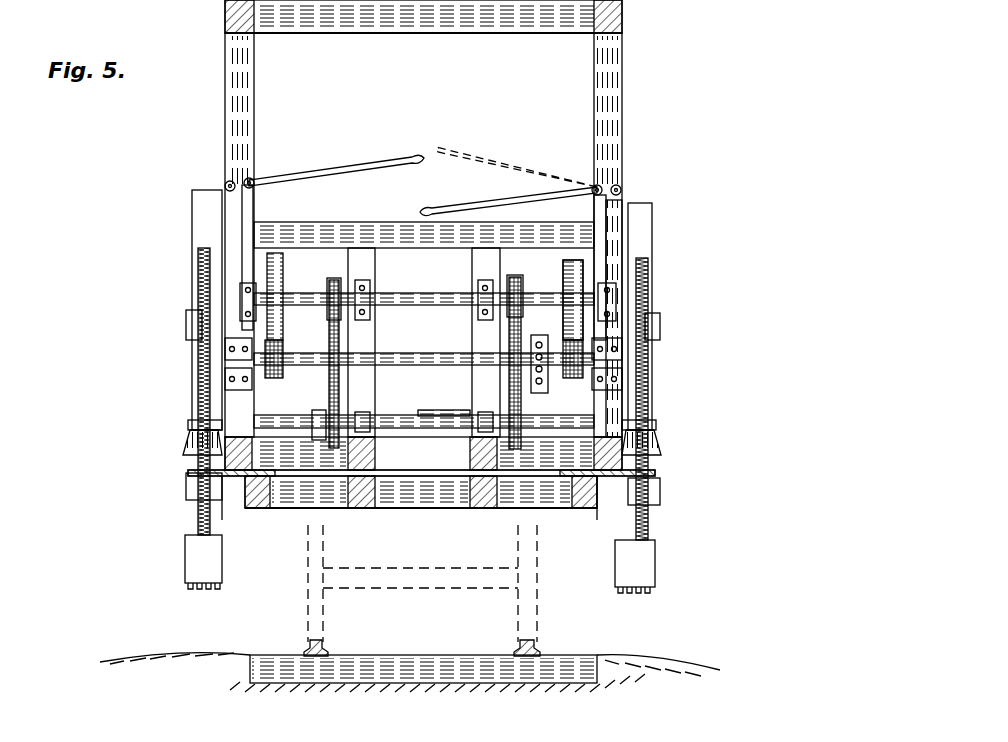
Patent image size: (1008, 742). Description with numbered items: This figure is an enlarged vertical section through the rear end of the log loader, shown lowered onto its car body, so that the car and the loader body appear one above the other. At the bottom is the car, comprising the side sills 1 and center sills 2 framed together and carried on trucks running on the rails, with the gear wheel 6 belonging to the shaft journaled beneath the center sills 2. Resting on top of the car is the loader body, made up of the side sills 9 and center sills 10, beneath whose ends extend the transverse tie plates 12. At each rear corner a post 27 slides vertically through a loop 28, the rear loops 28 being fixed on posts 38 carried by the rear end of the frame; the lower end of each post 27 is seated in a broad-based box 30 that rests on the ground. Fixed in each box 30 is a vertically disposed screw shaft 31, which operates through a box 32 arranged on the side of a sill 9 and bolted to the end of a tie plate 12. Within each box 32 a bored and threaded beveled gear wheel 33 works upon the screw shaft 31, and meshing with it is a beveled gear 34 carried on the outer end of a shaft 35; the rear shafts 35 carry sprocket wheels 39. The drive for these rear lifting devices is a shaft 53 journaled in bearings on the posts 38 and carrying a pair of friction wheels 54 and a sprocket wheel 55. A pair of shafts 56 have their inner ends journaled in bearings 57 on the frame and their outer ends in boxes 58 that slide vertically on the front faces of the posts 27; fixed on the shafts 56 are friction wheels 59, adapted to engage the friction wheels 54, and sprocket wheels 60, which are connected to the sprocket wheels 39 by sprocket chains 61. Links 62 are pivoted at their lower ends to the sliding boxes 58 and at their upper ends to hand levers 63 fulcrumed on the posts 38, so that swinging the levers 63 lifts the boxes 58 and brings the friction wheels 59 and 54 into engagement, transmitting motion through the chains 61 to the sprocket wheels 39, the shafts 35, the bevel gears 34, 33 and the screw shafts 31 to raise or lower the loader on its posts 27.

The side sills 1 is at (262, 495).
The center sills 2 is at (366, 495).
The gear wheel 6 is at (614, 318).
The side sills 9 is at (232, 480).
The center sills 10 is at (470, 450).
The tie plates 12 is at (422, 490).
The posts 27 is at (195, 250).
The loops 28 is at (195, 322).
The boxes 30 is at (222, 568).
The screw shafts 31 is at (205, 385).
The boxes 32 is at (200, 472).
The beveled gear wheels 33 is at (188, 445).
The beveled gears 34 is at (200, 415).
The shafts 35 is at (470, 422).
The posts 38 is at (240, 150).
The sprocket wheels 39 is at (388, 405).
The shaft 53 is at (420, 358).
The friction wheels 54 is at (278, 378).
The sprocket wheel 55 is at (533, 378).
The shafts 56 is at (550, 290).
The bearings 57 is at (372, 300).
The boxes 58 is at (242, 297).
The friction wheels 59 is at (275, 255).
The sprocket wheels 60 is at (330, 285).
The sprocket chains 61 is at (330, 334).
The links 62 is at (245, 238).
The hand levers 63 is at (305, 162).